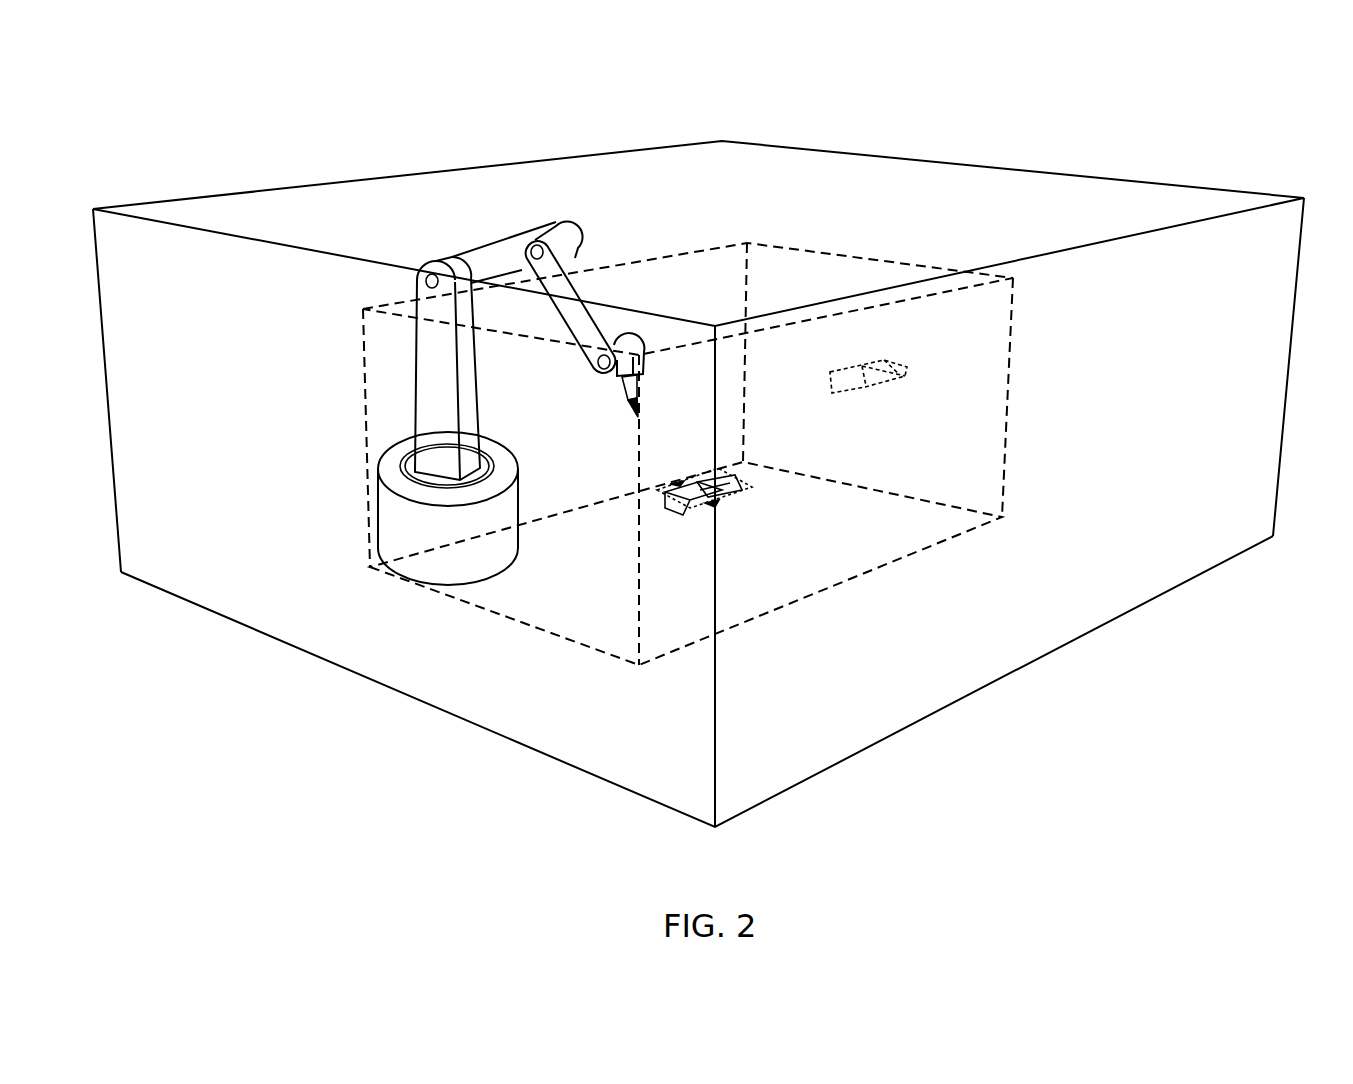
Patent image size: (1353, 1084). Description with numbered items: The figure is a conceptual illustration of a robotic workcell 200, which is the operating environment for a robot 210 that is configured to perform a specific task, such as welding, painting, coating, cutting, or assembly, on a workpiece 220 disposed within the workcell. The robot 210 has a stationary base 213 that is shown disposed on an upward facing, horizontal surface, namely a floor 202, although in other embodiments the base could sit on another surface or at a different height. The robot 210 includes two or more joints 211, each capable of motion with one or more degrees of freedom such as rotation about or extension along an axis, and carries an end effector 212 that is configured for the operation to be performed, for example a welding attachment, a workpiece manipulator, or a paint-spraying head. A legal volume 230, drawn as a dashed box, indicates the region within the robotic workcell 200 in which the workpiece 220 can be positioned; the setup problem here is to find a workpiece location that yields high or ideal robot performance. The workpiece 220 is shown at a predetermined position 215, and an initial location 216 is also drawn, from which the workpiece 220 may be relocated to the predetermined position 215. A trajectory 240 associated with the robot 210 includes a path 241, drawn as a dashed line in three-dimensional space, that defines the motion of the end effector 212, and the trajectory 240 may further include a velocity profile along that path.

The robotic workcell 200 is at (908, 160).
The floor 202 is at (697, 681).
The robot 210 is at (517, 391).
The joints 211 is at (435, 252).
The end effector 212 is at (636, 410).
The stationary base 213 is at (520, 537).
The predetermined position 215 is at (725, 505).
The initial location 216 is at (893, 357).
The workpiece 220 is at (685, 513).
The legal volume 230 is at (835, 252).
The trajectory 240 is at (757, 519).
The path 241 is at (747, 488).